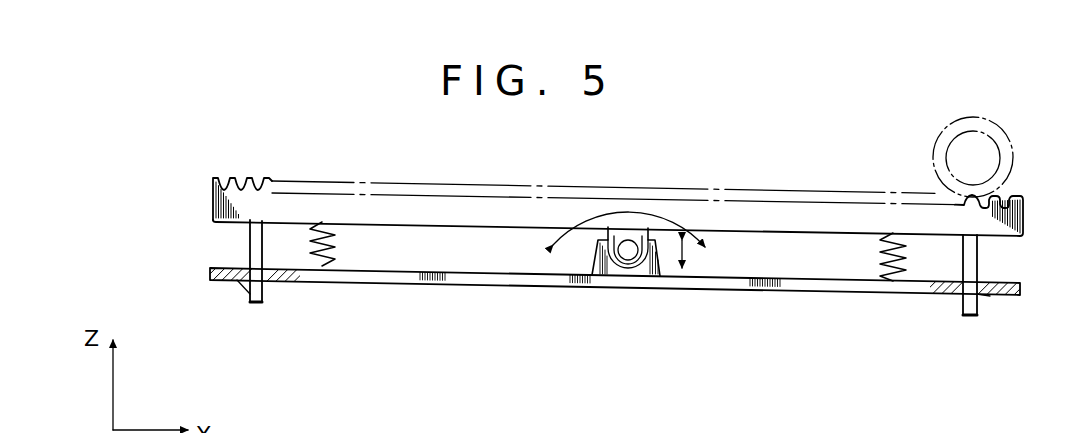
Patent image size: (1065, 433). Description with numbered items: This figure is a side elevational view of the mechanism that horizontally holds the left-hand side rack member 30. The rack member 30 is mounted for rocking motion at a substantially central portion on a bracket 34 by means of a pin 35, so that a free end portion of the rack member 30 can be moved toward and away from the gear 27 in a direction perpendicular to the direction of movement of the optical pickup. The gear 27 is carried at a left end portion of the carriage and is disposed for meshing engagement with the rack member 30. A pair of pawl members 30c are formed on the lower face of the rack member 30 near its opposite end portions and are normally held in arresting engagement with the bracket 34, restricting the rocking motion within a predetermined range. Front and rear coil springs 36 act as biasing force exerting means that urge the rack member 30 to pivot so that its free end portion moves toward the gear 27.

The gear 27 is at (968, 132).
The rack member 30 is at (768, 216).
The pawl member 30c is at (247, 292).
The bracket 34 is at (745, 293).
The pin 35 is at (628, 250).
The coil spring 36 is at (334, 264).